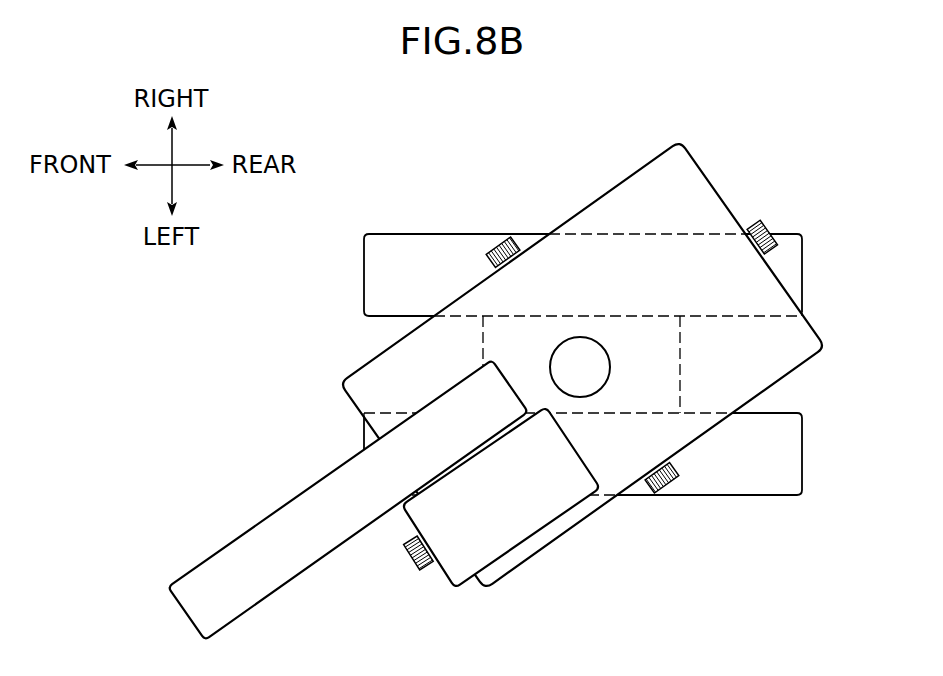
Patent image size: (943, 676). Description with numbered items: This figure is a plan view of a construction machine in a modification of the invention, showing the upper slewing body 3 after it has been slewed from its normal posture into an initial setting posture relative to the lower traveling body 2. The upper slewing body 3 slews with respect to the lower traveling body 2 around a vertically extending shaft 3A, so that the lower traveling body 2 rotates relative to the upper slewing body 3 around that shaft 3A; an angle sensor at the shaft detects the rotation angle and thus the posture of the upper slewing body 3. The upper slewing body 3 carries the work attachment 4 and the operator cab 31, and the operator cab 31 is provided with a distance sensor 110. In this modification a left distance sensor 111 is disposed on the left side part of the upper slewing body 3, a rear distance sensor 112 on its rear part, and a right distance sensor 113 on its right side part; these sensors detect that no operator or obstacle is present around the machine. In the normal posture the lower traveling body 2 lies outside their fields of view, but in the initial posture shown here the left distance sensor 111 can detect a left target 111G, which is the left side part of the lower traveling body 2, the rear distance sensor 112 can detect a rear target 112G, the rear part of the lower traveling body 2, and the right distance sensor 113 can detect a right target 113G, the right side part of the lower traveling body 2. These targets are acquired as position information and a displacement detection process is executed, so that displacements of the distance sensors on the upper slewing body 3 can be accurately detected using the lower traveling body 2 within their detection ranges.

The lower traveling body 2 is at (795, 463).
The upper slewing body 3 is at (657, 183).
The shaft 3A is at (578, 338).
The work attachment 4 is at (242, 535).
The operator cab 31 is at (492, 535).
The distance sensor 110 is at (410, 570).
The left distance sensor 111 is at (664, 484).
The rear distance sensor 112 is at (757, 221).
The right distance sensor 113 is at (499, 246).
The left target 111G is at (694, 510).
The rear target 112G is at (807, 220).
The right target 113G is at (474, 231).